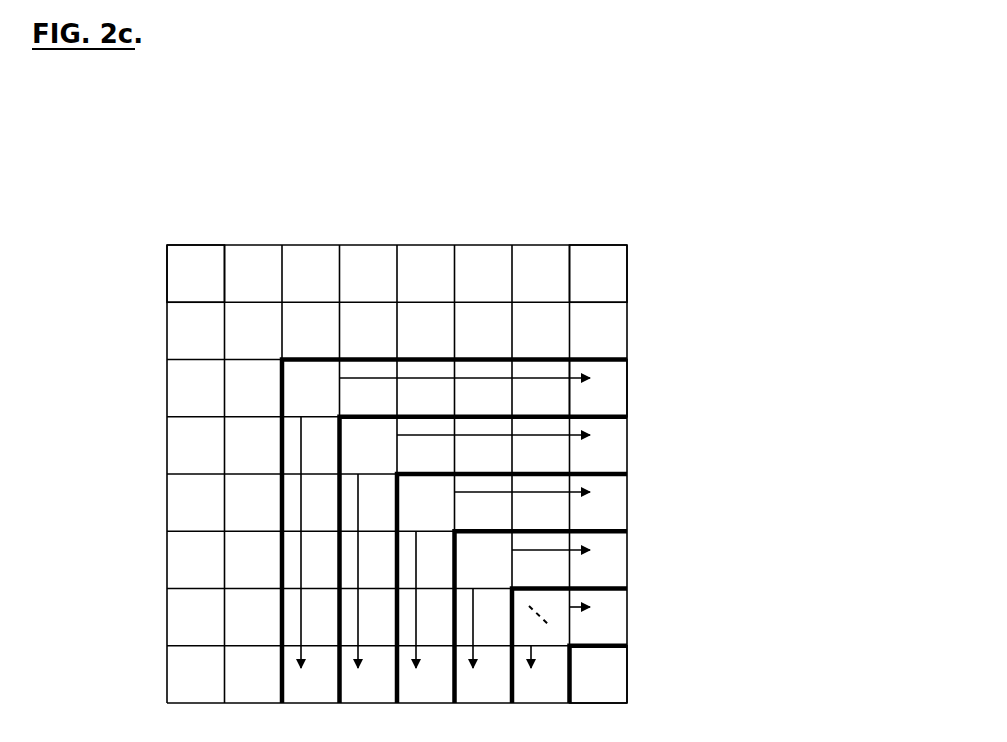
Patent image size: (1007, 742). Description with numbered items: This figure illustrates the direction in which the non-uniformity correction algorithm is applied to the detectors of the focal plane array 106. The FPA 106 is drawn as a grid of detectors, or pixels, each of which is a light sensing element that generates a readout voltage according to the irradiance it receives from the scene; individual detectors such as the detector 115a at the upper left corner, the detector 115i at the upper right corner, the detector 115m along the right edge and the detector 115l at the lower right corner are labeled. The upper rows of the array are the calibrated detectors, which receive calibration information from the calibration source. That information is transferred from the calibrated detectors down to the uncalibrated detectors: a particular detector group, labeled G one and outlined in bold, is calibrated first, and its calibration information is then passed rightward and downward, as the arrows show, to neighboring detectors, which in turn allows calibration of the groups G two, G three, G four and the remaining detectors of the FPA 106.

The focal plane array 106 is at (808, 207).
The detector 115a is at (193, 251).
The detector 115i is at (616, 272).
The detector 115m is at (618, 396).
The detector 115l is at (618, 684).